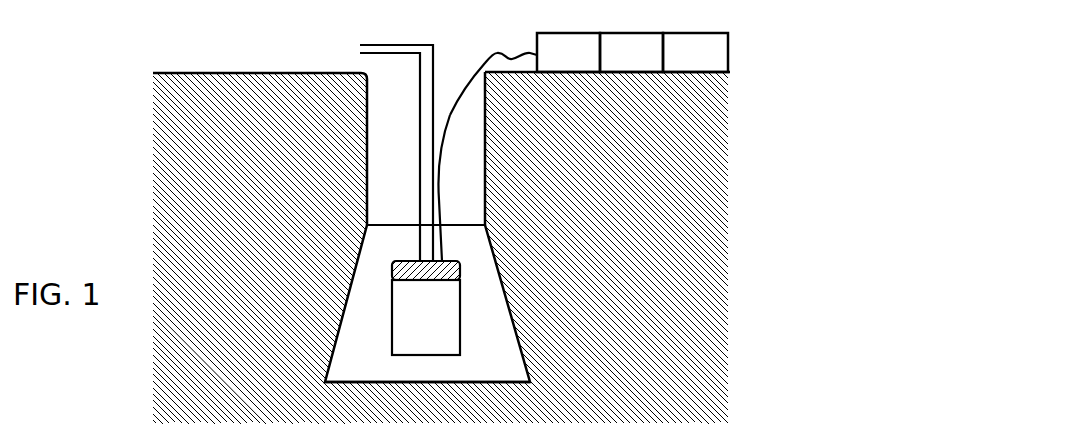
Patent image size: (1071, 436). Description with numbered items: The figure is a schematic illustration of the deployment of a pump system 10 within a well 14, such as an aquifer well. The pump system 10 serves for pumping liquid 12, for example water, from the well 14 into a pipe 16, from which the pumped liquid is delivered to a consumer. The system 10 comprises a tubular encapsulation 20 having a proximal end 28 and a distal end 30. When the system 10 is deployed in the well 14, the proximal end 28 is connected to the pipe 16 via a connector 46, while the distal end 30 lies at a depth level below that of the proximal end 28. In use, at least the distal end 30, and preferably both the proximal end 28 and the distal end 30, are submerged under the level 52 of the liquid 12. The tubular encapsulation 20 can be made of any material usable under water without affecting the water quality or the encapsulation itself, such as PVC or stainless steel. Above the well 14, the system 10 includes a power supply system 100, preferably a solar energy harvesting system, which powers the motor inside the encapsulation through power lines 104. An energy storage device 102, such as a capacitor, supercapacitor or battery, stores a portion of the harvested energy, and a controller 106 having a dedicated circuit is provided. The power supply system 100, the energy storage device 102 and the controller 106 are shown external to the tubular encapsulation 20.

The pump system 10 is at (379, 192).
The liquid 12 is at (480, 369).
The well 14 is at (490, 137).
The pipe 16 is at (434, 49).
The tubular encapsulation 20 is at (415, 321).
The proximal end 28 is at (376, 241).
The distal end 30 is at (385, 370).
The connector 46 is at (392, 266).
The level 52 is at (445, 224).
The power supply system 100 is at (695, 52).
The energy storage device 102 is at (631, 52).
The power lines 104 is at (508, 55).
The controller 106 is at (568, 52).